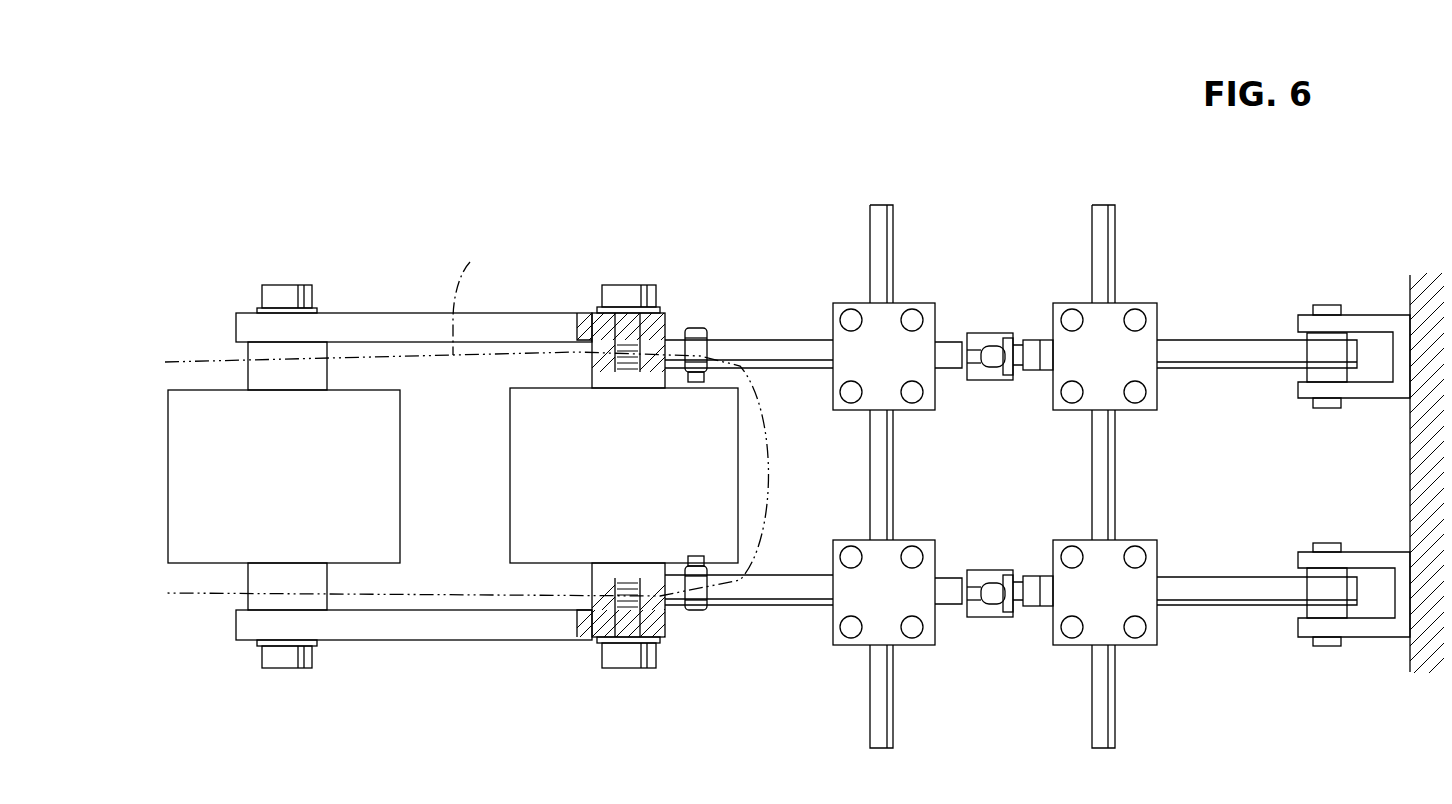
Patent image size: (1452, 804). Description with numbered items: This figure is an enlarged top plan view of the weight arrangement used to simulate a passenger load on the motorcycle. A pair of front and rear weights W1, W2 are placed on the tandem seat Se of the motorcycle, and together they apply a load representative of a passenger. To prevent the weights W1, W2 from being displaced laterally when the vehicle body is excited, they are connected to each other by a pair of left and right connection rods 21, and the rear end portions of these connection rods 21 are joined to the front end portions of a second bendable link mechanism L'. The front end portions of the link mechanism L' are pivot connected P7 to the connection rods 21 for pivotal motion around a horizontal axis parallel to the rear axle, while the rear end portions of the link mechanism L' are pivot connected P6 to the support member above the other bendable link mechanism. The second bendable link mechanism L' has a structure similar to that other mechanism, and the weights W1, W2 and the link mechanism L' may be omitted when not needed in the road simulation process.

The connection rods 21 is at (388, 313).
The tandem seat Se is at (480, 262).
The second bendable link mechanism L' is at (990, 389).
The pivot connection P6 is at (1328, 305).
The pivot connection P7 is at (630, 660).
The front weight W1 is at (277, 492).
The rear weight W2 is at (616, 492).